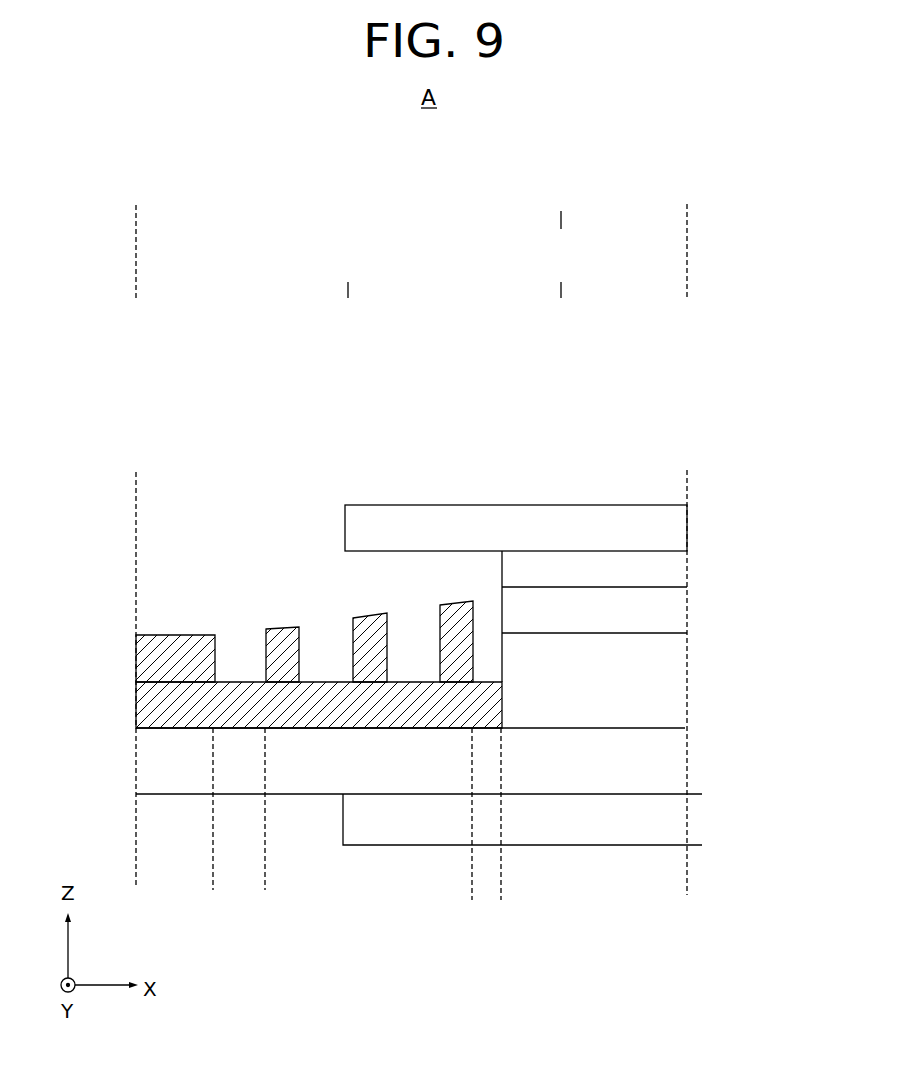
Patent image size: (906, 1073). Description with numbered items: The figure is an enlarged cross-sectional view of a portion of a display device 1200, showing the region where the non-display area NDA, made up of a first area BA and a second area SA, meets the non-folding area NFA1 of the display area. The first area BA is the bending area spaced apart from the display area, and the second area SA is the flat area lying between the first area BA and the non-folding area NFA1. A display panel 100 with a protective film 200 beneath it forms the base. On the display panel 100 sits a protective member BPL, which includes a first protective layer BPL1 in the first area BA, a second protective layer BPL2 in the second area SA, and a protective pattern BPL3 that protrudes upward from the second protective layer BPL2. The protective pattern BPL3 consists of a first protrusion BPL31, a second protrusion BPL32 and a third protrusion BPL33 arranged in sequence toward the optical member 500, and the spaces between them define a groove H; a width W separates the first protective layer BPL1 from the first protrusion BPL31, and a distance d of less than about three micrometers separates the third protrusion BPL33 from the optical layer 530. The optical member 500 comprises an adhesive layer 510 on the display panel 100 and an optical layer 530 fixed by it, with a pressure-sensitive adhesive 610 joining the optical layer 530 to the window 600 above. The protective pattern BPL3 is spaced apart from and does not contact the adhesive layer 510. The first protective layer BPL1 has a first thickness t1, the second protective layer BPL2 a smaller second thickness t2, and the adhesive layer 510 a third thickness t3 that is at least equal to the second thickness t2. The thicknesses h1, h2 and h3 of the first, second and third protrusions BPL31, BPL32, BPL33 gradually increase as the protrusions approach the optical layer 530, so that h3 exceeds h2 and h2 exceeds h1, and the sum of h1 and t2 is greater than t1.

The display device 1200 is at (732, 387).
The window 600 is at (672, 526).
The pressure-sensitive adhesive 610 is at (672, 566).
The optical layer 530 is at (672, 611).
The adhesive layer 510 is at (672, 666).
The optical member 500 is at (765, 603).
The display panel 100 is at (672, 758).
The protective film 200 is at (672, 823).
The protective member BPL is at (427, 409).
The first protective layer BPL1 is at (170, 648).
The second protective layer BPL2 is at (242, 690).
The protective pattern BPL3 is at (500, 446).
The first protrusion BPL31 is at (290, 640).
The second protrusion BPL32 is at (372, 628).
The third protrusion BPL33 is at (455, 615).
The non-display area NDA is at (560, 219).
The first area BA is at (137, 289).
The second area SA is at (349, 289).
The non-folding area NFA1 is at (687, 289).
The groove H is at (337, 664).
The width W is at (264, 867).
The distance d is at (535, 869).
The first thickness t1 is at (125, 635).
The second thickness t2 is at (215, 682).
The third thickness t3 is at (490, 632).
The thickness of first protrusion h1 is at (307, 681).
The thickness of second protrusion h2 is at (392, 681).
The thickness of third protrusion h3 is at (518, 604).